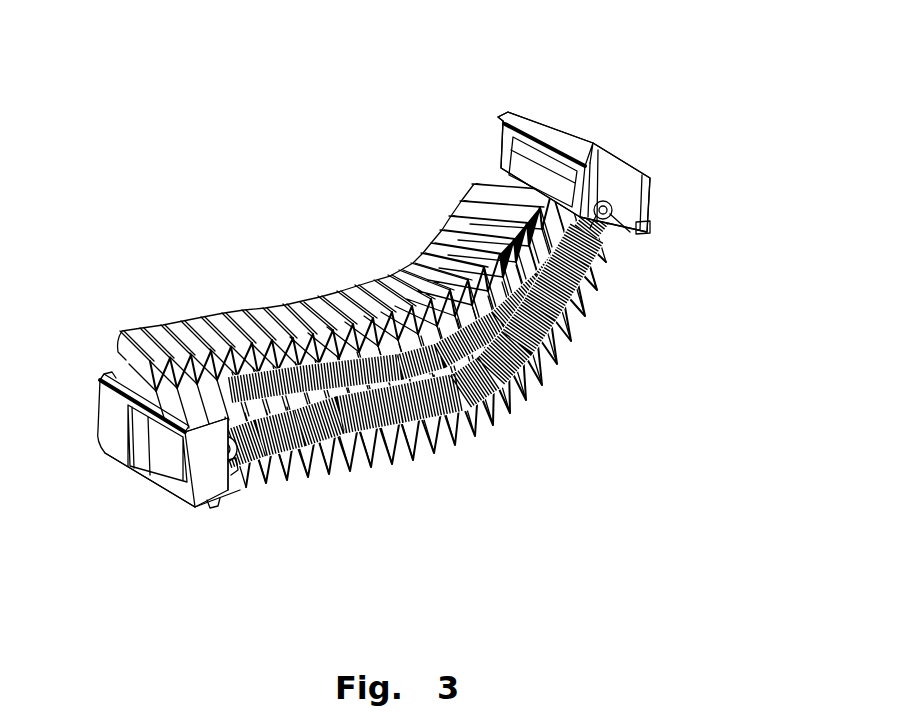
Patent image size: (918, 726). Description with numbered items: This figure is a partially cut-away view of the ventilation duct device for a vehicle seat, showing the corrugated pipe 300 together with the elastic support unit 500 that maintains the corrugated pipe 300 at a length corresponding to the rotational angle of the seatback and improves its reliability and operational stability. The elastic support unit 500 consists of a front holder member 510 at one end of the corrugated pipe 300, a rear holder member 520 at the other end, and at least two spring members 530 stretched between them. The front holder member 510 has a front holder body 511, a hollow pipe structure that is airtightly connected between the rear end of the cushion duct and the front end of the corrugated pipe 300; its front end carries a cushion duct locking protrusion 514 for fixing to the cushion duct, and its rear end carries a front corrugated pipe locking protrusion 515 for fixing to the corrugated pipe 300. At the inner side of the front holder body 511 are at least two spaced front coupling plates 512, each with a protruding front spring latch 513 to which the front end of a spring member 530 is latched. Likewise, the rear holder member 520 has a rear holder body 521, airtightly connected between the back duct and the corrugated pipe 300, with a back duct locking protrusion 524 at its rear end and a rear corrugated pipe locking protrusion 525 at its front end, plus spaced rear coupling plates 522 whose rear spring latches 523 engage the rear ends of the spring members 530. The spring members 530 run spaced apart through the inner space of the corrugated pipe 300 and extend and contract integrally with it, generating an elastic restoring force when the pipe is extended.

The corrugated pipe 300 is at (305, 308).
The elastic support unit 500 is at (398, 331).
The front holder member 510 is at (171, 446).
The front holder body 511 is at (133, 487).
The front coupling plates 512 is at (177, 457).
The front spring latch 513 is at (242, 470).
The cushion duct locking protrusion 514 is at (112, 382).
The front corrugated pipe locking protrusion 515 is at (233, 493).
The rear holder member 520 is at (601, 169).
The rear holder body 521 is at (545, 125).
The rear coupling plates 522 is at (590, 143).
The rear spring latch 523 is at (632, 233).
The back duct locking protrusion 524 is at (510, 115).
The rear corrugated pipe locking protrusion 525 is at (642, 228).
The spring members 530 is at (457, 447).